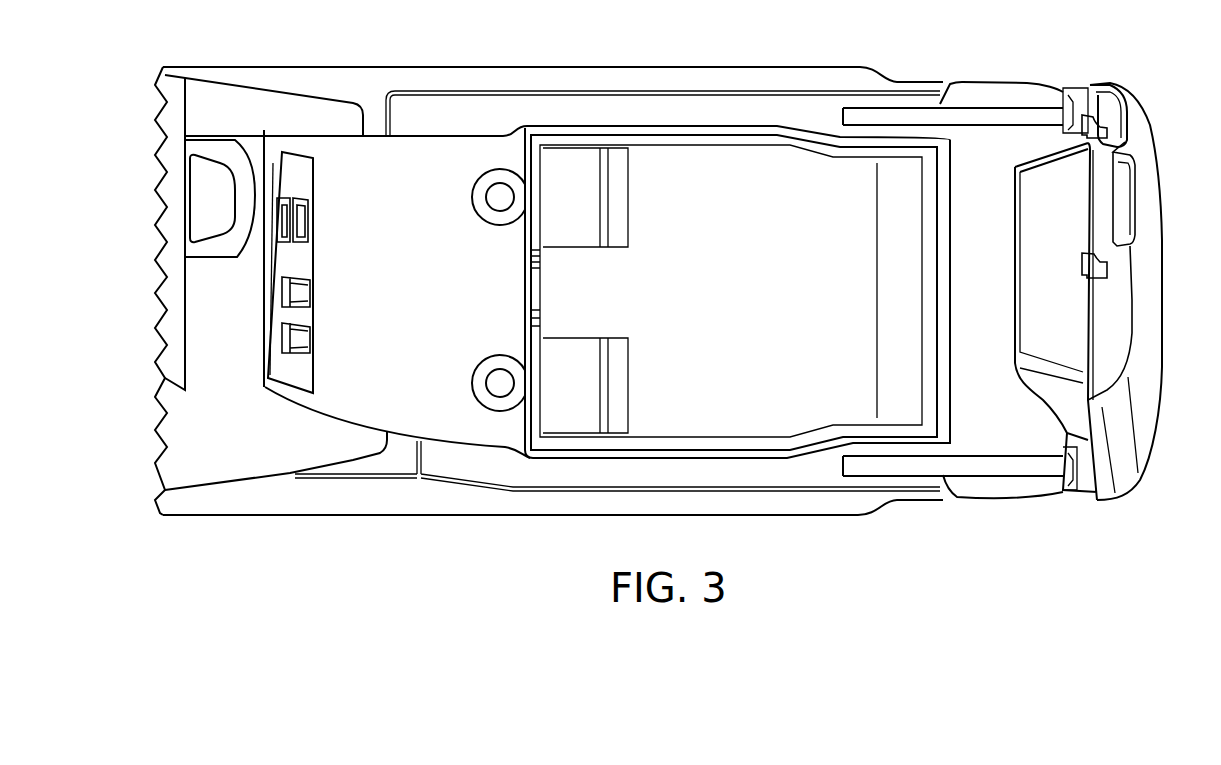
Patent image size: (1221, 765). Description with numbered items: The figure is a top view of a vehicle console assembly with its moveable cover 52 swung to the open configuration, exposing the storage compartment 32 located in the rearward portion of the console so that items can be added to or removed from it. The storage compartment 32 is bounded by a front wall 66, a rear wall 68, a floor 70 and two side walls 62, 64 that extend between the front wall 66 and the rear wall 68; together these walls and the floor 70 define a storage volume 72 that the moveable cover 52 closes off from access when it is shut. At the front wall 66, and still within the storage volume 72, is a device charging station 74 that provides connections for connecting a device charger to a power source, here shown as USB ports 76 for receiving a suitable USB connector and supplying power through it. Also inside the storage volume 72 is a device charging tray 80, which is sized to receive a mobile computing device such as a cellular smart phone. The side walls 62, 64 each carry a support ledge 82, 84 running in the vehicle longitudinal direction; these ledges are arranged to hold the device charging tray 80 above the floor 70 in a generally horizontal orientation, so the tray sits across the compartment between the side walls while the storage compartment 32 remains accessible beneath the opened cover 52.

The storage compartment 32 is at (735, 114).
The moveable cover 52 is at (1176, 173).
The side wall 62 is at (692, 125).
The side wall 64 is at (720, 459).
The front wall 66 is at (307, 266).
The rear wall 68 is at (952, 258).
The floor 70 is at (440, 293).
The storage volume 72 is at (438, 180).
The device charging station 74 is at (282, 184).
The USB ports 76 is at (308, 218).
The device charging tray 80 is at (662, 402).
The support ledge 82 is at (780, 125).
The support ledge 84 is at (705, 459).